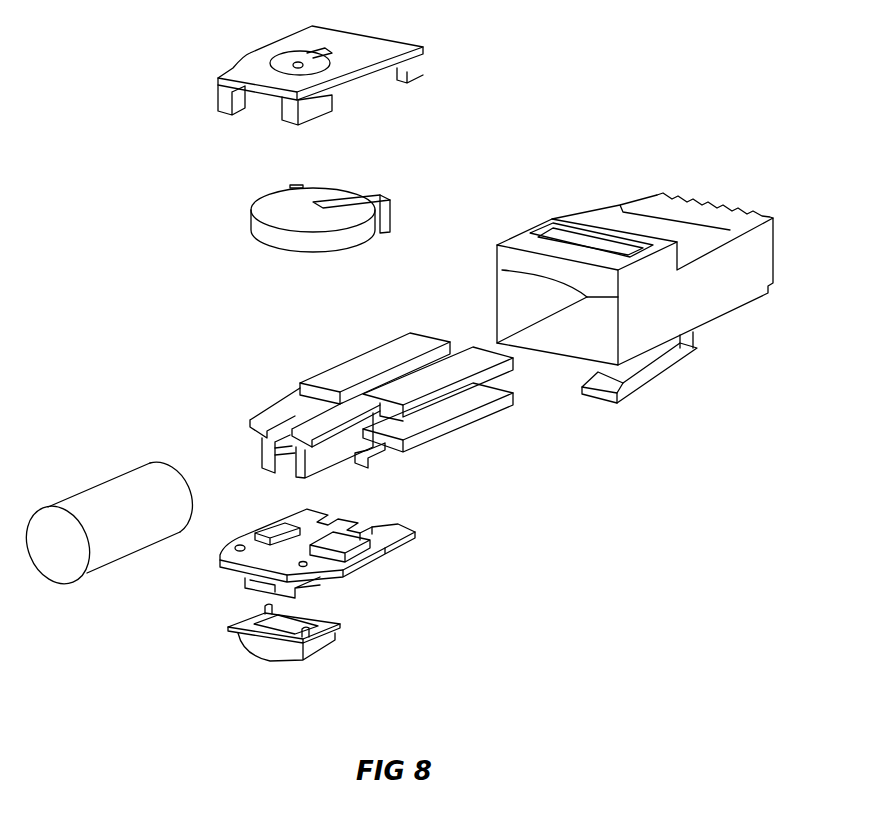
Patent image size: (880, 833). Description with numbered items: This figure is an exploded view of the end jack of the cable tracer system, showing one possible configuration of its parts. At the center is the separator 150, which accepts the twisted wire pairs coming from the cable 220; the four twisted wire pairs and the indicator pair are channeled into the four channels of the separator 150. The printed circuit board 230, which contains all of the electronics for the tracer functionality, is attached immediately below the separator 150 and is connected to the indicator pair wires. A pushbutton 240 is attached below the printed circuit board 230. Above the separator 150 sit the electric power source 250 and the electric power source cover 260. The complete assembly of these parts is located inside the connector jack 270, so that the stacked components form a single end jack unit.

The separator 150 is at (462, 418).
The cable 220 is at (110, 483).
The printed circuit board 230 is at (390, 548).
The pushbutton 240 is at (333, 643).
The electric power source 250 is at (258, 228).
The electric power source cover 260 is at (250, 63).
The connector jack 270 is at (725, 307).